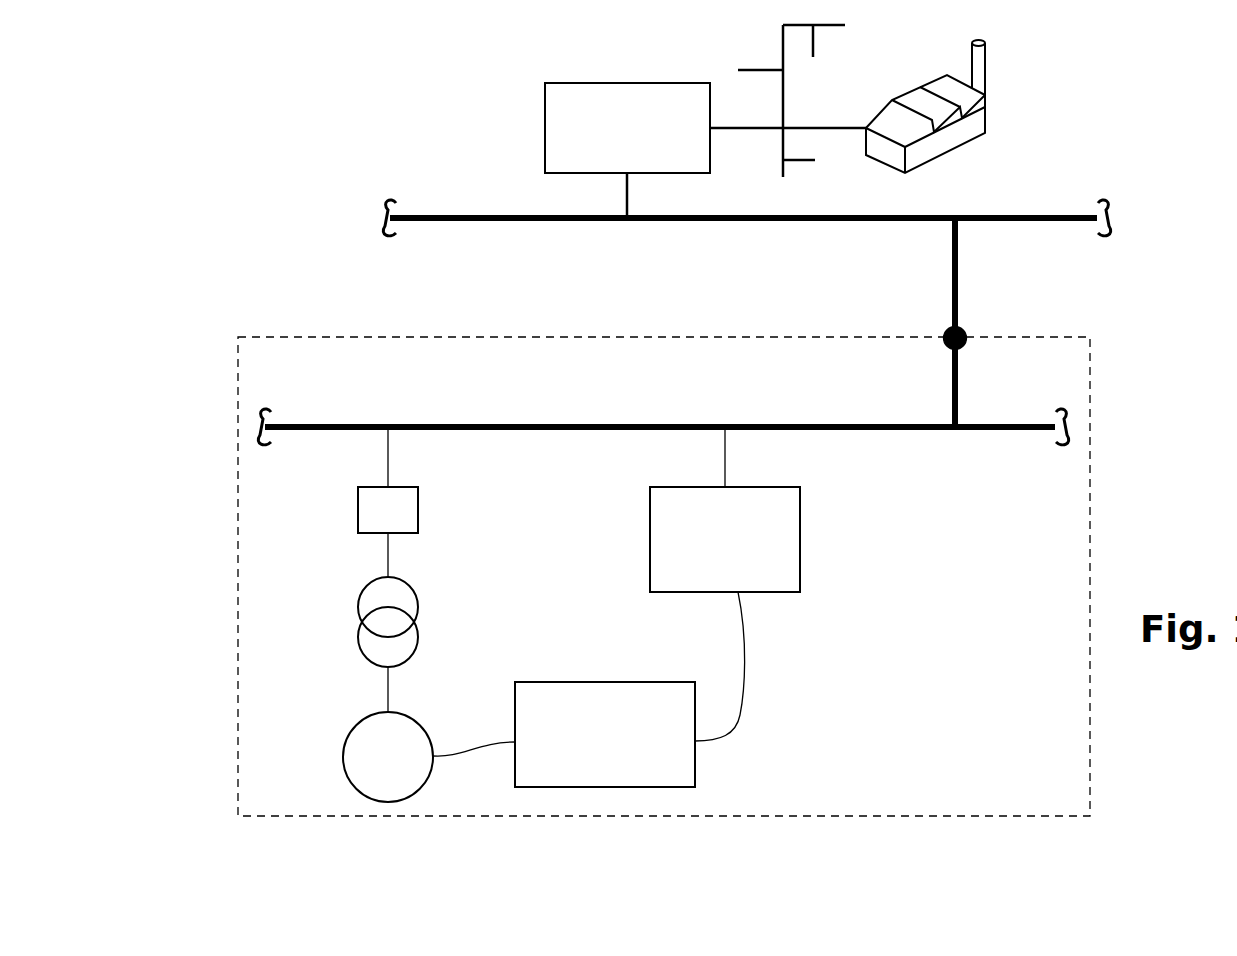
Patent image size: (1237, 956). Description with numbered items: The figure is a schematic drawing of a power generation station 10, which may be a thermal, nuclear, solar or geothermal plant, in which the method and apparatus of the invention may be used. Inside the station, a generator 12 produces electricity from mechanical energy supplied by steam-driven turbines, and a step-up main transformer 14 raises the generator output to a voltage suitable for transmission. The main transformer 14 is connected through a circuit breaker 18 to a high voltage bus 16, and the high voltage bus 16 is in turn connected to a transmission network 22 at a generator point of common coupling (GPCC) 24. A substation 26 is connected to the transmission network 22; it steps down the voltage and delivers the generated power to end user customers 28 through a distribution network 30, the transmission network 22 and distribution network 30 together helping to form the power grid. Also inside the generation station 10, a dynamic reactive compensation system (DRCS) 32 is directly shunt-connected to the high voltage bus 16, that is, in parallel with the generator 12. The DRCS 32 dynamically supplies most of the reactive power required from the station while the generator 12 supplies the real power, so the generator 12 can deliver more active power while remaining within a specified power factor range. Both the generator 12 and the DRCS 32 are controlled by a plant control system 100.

The power generation station 10 is at (238, 336).
The generator 12 is at (342, 738).
The step-up main transformer 14 is at (419, 607).
The high voltage bus 16 is at (700, 424).
The circuit breaker 18 is at (354, 518).
The transmission network 22 is at (962, 306).
The generator point of common coupling (GPCC) 24 is at (944, 331).
The substation 26 is at (705, 149).
The end user customers 28 is at (943, 159).
The distribution network 30 is at (815, 97).
The dynamic reactive compensation system (DRCS) 32 is at (725, 511).
The plant control system 100 is at (630, 689).